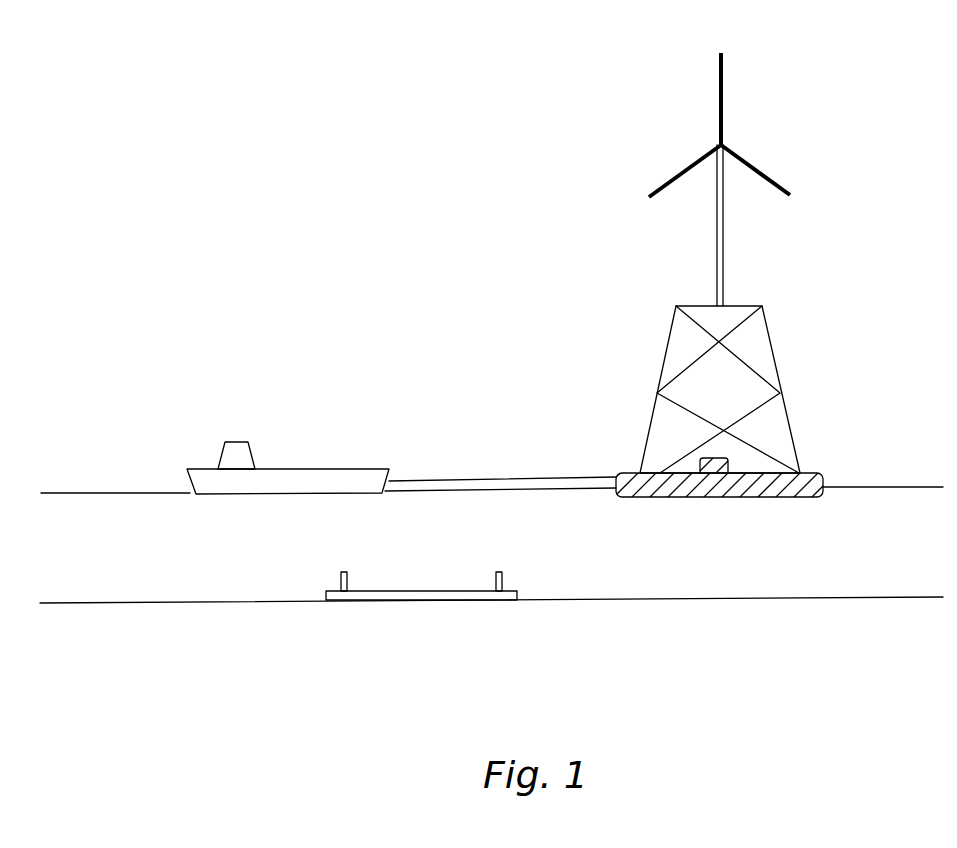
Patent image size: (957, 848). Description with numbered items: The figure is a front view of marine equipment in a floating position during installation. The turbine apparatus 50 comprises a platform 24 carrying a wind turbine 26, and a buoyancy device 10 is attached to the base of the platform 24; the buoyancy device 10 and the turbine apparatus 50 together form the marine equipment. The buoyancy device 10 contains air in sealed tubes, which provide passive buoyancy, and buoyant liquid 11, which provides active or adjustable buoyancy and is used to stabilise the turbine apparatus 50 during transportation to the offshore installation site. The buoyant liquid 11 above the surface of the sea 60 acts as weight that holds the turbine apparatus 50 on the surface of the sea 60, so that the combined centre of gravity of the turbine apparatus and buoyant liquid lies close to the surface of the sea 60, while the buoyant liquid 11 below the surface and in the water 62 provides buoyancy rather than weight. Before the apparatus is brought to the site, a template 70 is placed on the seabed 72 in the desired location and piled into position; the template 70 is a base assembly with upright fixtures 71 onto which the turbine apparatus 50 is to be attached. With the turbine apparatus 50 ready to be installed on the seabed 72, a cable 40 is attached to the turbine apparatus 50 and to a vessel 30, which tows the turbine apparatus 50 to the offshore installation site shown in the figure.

The buoyancy device 10 is at (740, 261).
The buoyant liquid 11 is at (813, 472).
The platform 24 is at (672, 326).
The wind turbine 26 is at (721, 117).
The vessel 30 is at (241, 454).
The cable 40 is at (500, 477).
The turbine apparatus 50 is at (711, 249).
The surface of the sea 60 is at (68, 493).
The water 62 is at (131, 542).
The template 70 is at (422, 592).
The upright fixtures 71 is at (503, 580).
The seabed 72 is at (767, 638).